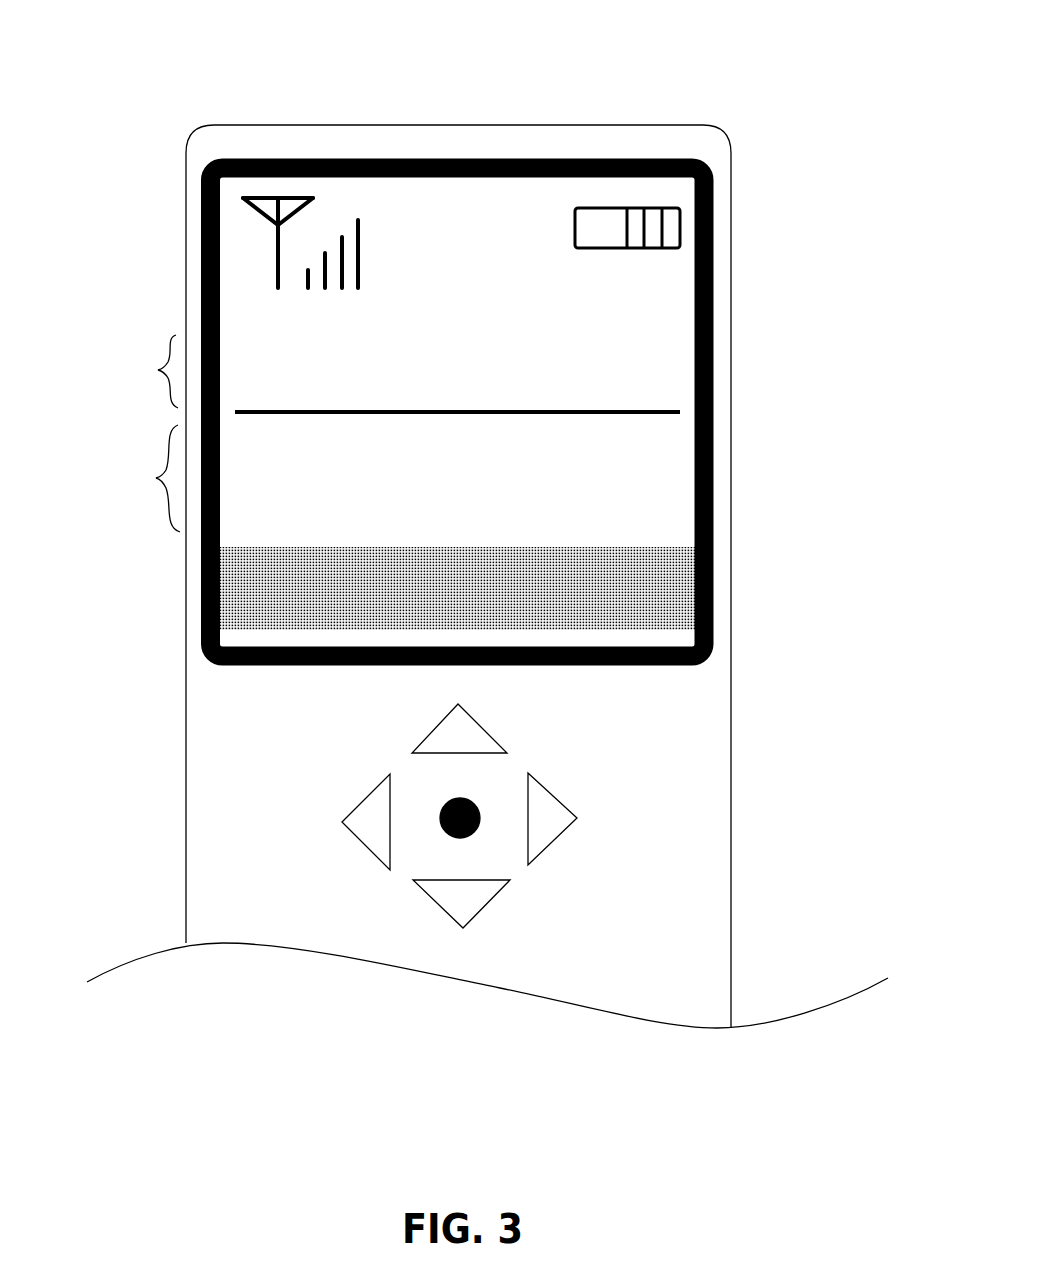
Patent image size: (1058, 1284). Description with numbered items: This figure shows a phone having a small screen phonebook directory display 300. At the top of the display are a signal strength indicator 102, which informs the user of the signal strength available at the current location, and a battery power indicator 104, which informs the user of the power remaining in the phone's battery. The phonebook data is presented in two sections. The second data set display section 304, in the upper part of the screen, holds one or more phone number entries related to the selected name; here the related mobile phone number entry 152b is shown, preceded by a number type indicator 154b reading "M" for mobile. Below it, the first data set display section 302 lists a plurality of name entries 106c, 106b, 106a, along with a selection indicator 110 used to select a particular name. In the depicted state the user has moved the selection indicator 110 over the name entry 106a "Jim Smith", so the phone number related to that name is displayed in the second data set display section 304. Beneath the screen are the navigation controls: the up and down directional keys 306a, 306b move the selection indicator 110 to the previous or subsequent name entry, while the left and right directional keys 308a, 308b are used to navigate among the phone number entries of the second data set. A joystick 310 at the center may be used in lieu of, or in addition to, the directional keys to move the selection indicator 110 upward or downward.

The small screen phonebook directory display 300 is at (606, 84).
The signal strength indicator 102 is at (239, 245).
The battery power indicator 104 is at (694, 221).
The number type indicator for mobile 154b is at (250, 361).
The mobile phone number entry 152b is at (590, 374).
The second data set display section 304 is at (135, 381).
The first data set display section 302 is at (152, 508).
The name entry 106c is at (587, 444).
The name entry 106b is at (525, 515).
The name entry 106a is at (610, 595).
The selection indicator 110 is at (250, 602).
The up directional key 306a is at (510, 721).
The down directional key 306b is at (509, 920).
The left directional key 308a is at (330, 848).
The right directional key 308b is at (586, 796).
The joystick 310 is at (435, 790).